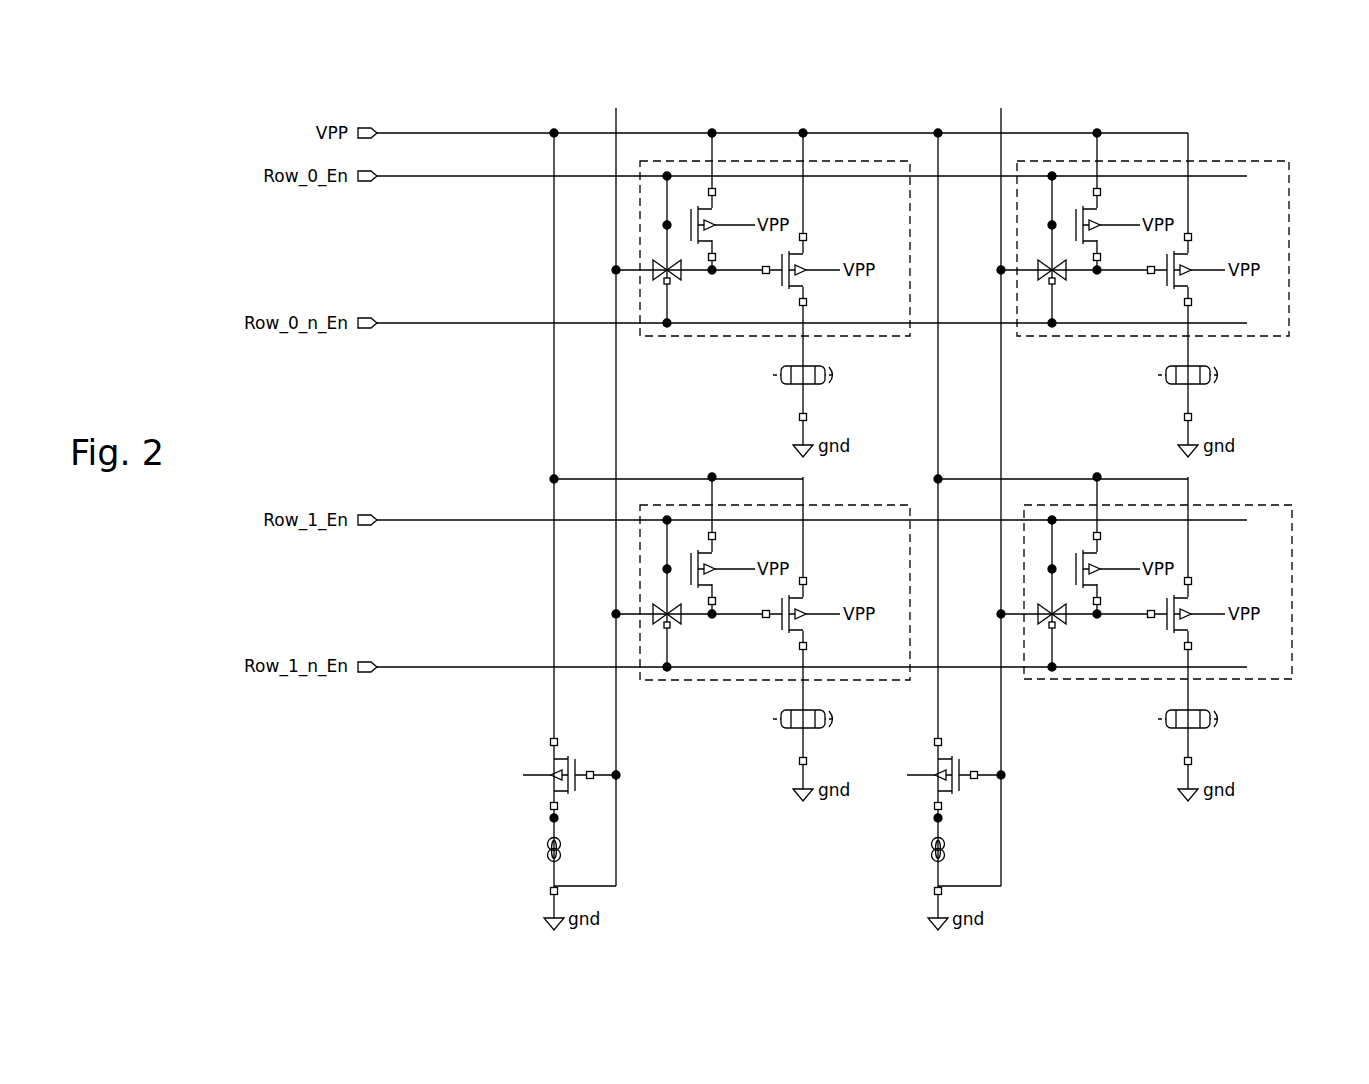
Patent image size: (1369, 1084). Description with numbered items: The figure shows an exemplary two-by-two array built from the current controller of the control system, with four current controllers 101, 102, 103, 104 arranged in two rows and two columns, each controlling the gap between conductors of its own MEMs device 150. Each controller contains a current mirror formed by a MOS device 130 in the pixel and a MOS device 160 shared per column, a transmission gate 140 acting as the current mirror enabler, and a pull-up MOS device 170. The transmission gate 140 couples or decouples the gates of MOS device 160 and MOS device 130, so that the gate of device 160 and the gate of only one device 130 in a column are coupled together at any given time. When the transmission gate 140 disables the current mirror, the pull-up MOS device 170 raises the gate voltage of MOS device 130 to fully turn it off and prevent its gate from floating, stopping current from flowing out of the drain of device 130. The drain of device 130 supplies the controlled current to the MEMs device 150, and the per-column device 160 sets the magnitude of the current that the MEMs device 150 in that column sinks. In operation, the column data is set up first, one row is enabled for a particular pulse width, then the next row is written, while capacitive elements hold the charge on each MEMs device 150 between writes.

The current controller 101 is at (1285, 153).
The current controller 102 is at (1290, 497).
The current controller 103 is at (886, 153).
The current controller 104 is at (886, 497).
The MOS device 130 is at (838, 246).
The transmission gate 140 is at (694, 330).
The MEMs device 150 is at (858, 392).
The MOS device 160 is at (532, 729).
The pull-up MOS device 170 is at (729, 203).